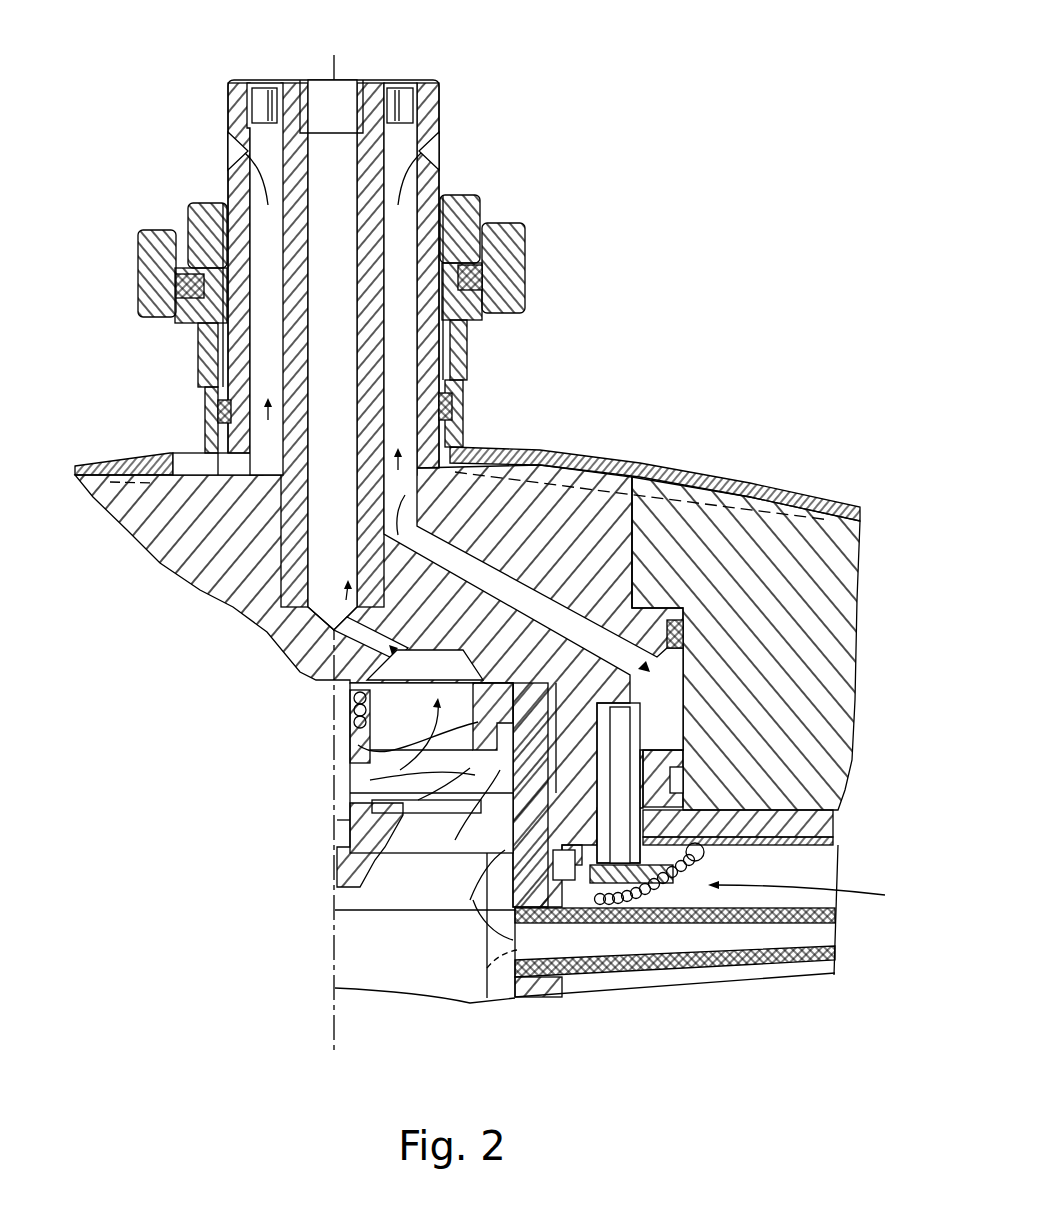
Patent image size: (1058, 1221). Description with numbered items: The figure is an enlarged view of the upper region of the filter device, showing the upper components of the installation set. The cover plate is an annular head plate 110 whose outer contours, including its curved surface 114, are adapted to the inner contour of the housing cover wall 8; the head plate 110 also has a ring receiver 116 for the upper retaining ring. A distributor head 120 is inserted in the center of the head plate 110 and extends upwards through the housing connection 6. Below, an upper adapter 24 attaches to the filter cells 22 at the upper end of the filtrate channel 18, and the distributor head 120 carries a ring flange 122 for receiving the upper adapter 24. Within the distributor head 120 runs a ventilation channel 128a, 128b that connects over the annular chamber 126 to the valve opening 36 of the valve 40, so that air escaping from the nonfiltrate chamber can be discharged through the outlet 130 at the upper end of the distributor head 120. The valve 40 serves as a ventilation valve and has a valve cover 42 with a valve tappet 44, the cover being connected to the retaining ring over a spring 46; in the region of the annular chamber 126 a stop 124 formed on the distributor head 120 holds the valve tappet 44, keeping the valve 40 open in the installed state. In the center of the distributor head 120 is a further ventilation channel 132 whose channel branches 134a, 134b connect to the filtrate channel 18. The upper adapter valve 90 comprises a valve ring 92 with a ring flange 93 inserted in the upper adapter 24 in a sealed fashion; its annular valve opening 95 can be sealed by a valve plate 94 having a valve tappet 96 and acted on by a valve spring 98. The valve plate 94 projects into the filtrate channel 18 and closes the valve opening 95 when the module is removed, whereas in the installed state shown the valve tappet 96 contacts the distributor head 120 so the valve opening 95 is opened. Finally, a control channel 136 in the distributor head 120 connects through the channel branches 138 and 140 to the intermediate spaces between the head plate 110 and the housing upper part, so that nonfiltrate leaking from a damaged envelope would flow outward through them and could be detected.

The housing connection 6 is at (508, 274).
The housing cover wall 8 is at (769, 493).
The filtrate channel 18 is at (370, 948).
The filter cell 22 is at (692, 988).
The upper adapter 24 is at (465, 890).
The valve opening 36 is at (700, 800).
The valve 40 is at (812, 895).
The valve cover 42 is at (592, 885).
The valve tappet 44 is at (642, 723).
The spring 46 is at (641, 890).
The upper adapter valve 90 is at (328, 845).
The valve ring 92 is at (470, 770).
The ring flange 93 is at (428, 705).
The valve plate 94 is at (357, 880).
The valve opening 95 is at (477, 731).
The valve tappet 96 is at (333, 800).
The valve spring 98 is at (355, 693).
The head plate 110 is at (718, 512).
The curved surface 114 is at (831, 507).
The ring receiver 116 is at (762, 805).
The distributor head 120 is at (510, 490).
The ring flange 122 is at (483, 806).
The stop 124 is at (650, 700).
The annular chamber 126 is at (690, 626).
The ventilation channel 128a is at (512, 568).
The ventilation channel 128b is at (400, 347).
The outlet 130 is at (443, 148).
The ventilation channel 132 is at (312, 152).
The channel branch 134a is at (297, 648).
The channel branch 134b is at (290, 672).
The control channel 136 is at (262, 353).
The channel branch 138 is at (172, 454).
The channel branch 140 is at (650, 478).